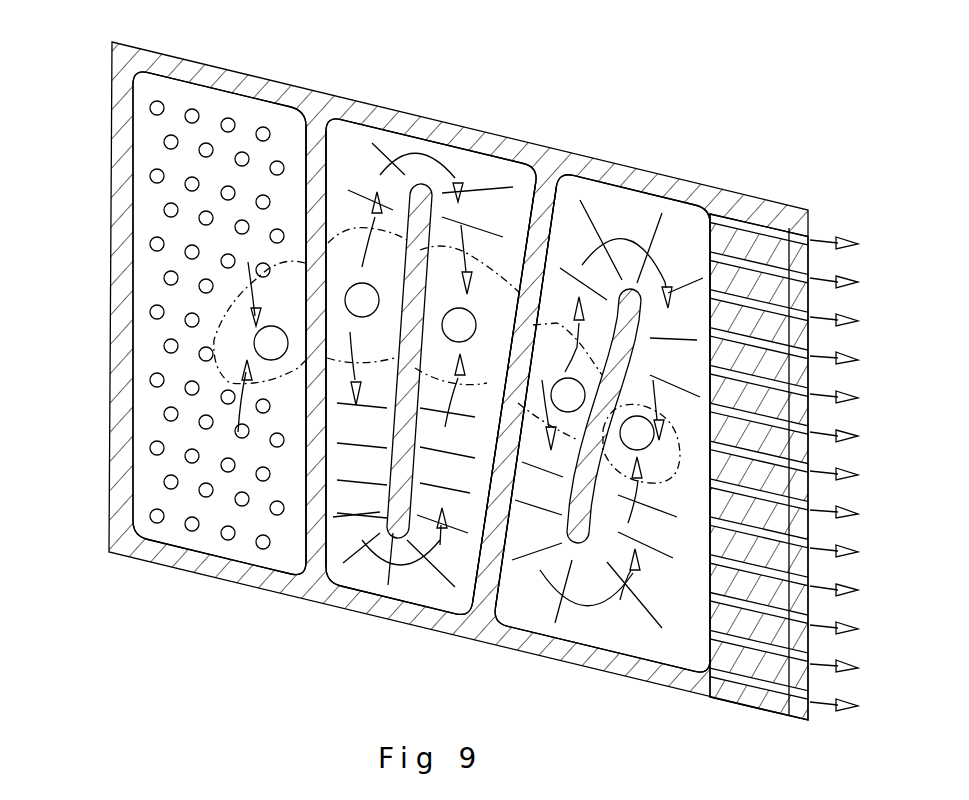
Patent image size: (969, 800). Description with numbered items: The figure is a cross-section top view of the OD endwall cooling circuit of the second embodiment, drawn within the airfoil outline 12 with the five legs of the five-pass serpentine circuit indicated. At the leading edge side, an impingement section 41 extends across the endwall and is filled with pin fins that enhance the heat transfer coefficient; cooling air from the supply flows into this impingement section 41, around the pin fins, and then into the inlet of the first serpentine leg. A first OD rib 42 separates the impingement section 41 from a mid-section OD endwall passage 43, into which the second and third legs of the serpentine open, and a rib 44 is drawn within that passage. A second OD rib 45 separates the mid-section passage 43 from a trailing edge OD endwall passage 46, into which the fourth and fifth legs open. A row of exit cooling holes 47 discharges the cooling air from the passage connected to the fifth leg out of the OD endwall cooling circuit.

The airfoil wall 12 is at (232, 77).
The leading edge side impingement section 41 is at (152, 276).
The first OD rib 42 is at (315, 180).
The mid-section OD endwall passage 43 is at (367, 575).
The rib 44 is at (417, 227).
The second OD rib 45 is at (545, 200).
The trailing edge OD endwall passage 46 is at (625, 208).
The trailing edge exit slots 47 is at (812, 382).